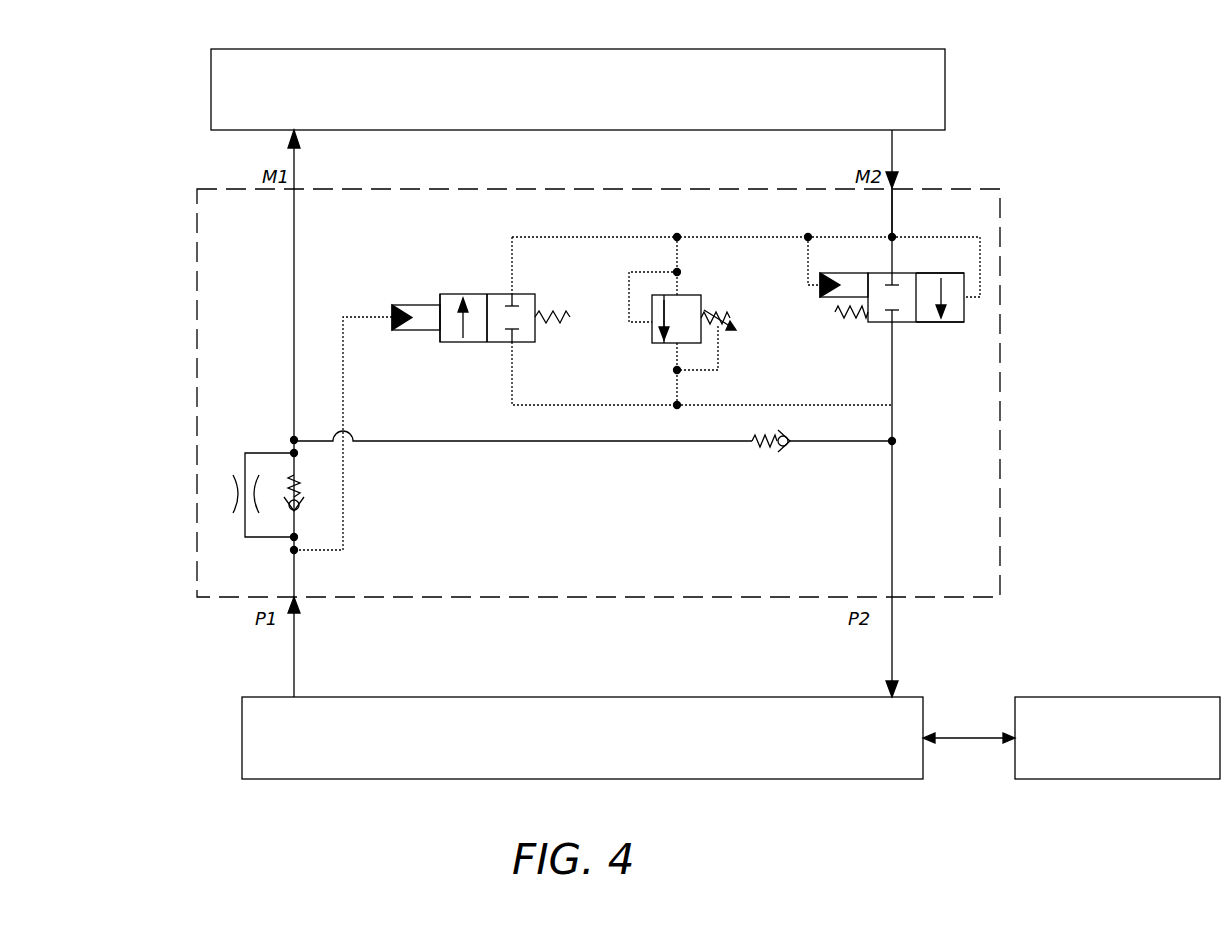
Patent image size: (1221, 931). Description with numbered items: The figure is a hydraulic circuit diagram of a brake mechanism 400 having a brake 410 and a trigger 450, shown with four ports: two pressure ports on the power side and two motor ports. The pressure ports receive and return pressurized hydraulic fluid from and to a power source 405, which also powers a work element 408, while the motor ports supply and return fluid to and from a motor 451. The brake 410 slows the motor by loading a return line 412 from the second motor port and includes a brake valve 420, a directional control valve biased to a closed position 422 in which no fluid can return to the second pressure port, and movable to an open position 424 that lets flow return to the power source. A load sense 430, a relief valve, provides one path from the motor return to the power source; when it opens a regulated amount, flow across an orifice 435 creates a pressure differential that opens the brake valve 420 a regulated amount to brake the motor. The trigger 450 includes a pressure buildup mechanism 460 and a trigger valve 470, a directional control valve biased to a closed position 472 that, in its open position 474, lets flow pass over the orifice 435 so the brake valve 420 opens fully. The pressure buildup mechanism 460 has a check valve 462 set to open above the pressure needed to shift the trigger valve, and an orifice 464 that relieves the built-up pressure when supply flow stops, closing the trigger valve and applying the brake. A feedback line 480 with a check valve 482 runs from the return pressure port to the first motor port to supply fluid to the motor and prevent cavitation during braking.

The brake mechanism 400 is at (988, 597).
The power source 405 is at (582, 738).
The work element 408 is at (1117, 738).
The brake 410 is at (742, 220).
The return line 412 is at (896, 216).
The brake valve 420 is at (917, 322).
The closed position 422 is at (878, 322).
The open position 424 is at (964, 322).
The load sense 430 is at (672, 343).
The orifice 435 is at (868, 236).
The trigger 450 is at (435, 268).
The motor 451 is at (578, 89).
The pressure buildup mechanism 460 is at (258, 426).
The check valve 462 is at (305, 512).
The orifice 464 is at (245, 512).
The trigger valve 470 is at (470, 294).
The closed position 472 is at (497, 342).
The open position 474 is at (447, 342).
The feedback line 480 is at (465, 441).
The check valve 482 is at (778, 452).